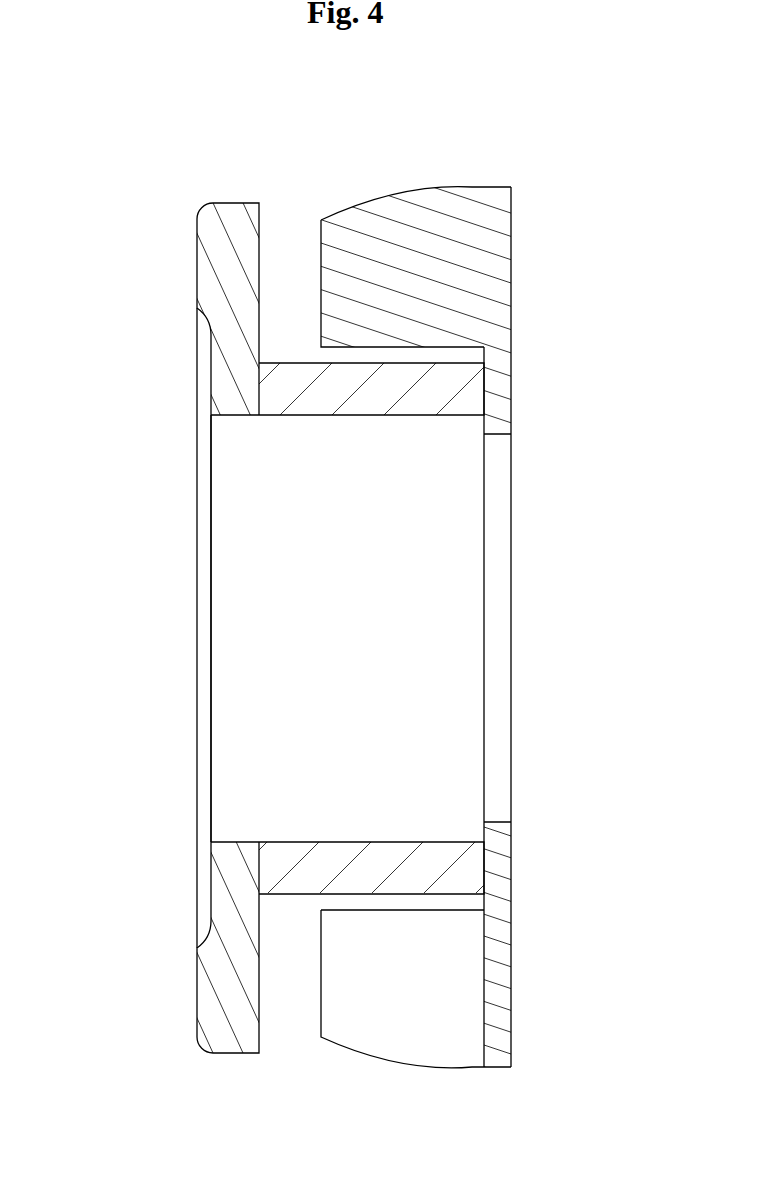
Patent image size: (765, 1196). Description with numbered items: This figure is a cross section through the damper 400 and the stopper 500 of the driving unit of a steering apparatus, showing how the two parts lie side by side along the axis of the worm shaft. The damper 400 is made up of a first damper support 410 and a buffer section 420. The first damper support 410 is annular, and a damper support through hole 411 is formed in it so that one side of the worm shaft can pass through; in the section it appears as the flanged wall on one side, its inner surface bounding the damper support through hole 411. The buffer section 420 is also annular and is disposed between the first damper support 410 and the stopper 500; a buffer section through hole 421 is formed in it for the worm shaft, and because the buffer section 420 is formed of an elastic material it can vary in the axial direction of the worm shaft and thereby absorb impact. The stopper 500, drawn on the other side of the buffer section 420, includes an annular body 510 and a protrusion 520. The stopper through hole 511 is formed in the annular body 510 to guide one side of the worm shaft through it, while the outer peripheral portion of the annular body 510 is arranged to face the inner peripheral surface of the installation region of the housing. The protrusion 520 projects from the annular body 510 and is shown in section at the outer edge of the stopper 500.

The damper 400 is at (317, 628).
The first damper support 410 is at (232, 283).
The damper support through hole 411 is at (228, 680).
The buffer section 420 is at (298, 388).
The buffer section through hole 421 is at (362, 584).
The stopper 500 is at (477, 632).
The annular body 510 is at (493, 387).
The stopper through hole 511 is at (493, 652).
The protrusion 520 is at (400, 223).